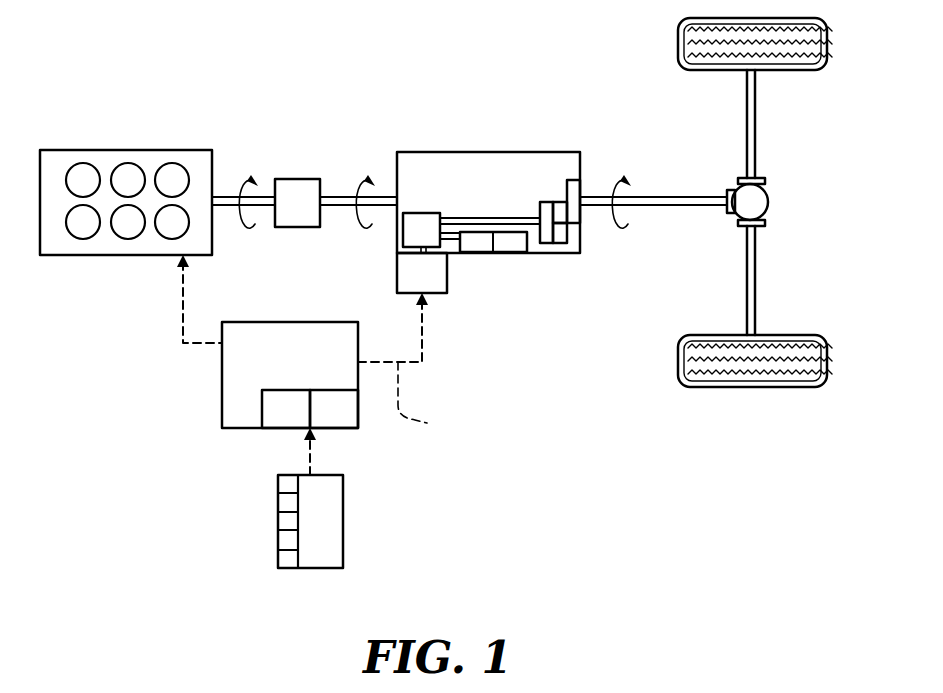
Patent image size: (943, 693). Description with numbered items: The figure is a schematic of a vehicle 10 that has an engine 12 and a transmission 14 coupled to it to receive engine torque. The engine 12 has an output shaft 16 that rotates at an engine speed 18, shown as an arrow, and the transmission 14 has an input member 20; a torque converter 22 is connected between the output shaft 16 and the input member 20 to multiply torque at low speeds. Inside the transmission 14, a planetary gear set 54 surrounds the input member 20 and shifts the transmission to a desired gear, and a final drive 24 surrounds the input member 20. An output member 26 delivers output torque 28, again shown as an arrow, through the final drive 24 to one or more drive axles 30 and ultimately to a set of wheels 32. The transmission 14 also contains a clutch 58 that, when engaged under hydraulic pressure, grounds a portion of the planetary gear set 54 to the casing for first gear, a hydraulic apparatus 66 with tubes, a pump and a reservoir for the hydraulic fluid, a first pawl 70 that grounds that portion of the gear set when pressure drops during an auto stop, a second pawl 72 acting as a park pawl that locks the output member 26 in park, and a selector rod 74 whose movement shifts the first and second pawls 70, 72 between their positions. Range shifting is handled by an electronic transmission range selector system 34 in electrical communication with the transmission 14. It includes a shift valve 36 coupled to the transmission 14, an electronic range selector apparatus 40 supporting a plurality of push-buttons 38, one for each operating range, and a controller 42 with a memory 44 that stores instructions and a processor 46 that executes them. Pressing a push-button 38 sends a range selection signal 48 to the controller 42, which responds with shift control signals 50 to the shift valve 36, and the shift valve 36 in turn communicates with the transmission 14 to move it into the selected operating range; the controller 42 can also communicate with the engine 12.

The vehicle 10 is at (129, 57).
The engine 12 is at (128, 163).
The transmission 14 is at (482, 152).
The output shaft 16 is at (263, 208).
The engine speed 18 is at (255, 183).
The input member 20 is at (333, 210).
The torque converter 22 is at (298, 179).
The final drive 24 is at (573, 180).
The output member 26 is at (633, 208).
The output torque 28 is at (624, 183).
The drive axles 30 is at (757, 148).
The wheels 32 is at (678, 47).
The electronic transmission range selector system 34 is at (178, 464).
The shift valve 36 is at (437, 296).
The push-buttons 38 is at (288, 522).
The electronic range selector apparatus 40 is at (345, 522).
The controller 42 is at (308, 322).
The memory 44 is at (300, 422).
The processor 46 is at (348, 422).
The range selection signal 48 is at (312, 456).
The shift control signals 50 is at (432, 400).
The planetary gear set 54 is at (527, 249).
The clutch 58 is at (452, 250).
The hydraulic apparatus 66 is at (422, 213).
The first pawl 70 is at (567, 233).
The second pawl 72 is at (548, 202).
The selector rod 74 is at (543, 202).